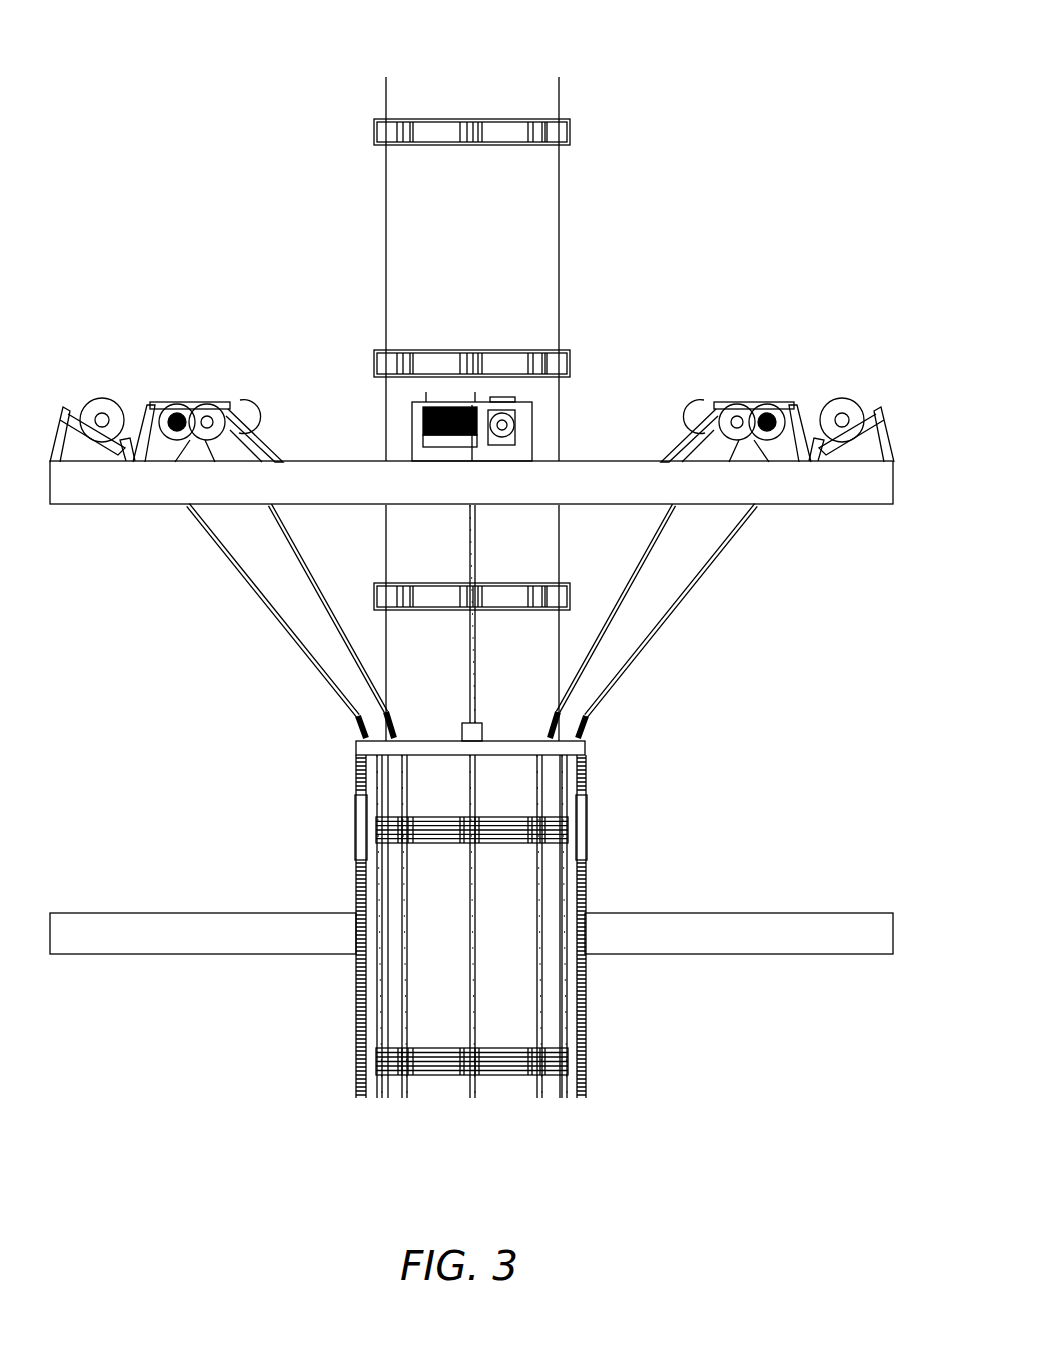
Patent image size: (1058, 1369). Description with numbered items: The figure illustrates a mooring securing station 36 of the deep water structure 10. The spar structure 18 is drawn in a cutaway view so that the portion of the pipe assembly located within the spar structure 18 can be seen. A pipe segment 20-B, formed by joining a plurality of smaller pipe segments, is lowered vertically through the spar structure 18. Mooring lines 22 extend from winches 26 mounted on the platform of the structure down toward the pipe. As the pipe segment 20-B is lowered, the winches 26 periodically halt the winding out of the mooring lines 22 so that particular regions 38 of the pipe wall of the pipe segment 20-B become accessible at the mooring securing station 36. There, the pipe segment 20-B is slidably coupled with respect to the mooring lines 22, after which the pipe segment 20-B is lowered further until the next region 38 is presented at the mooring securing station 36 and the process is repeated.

The deep water structure 10 is at (595, 56).
The spar structure 18 is at (587, 1066).
The pipe segment 20-B is at (560, 220).
The mooring lines 22 is at (298, 557).
The winches 26 is at (110, 397).
The mooring securing station 36 is at (340, 743).
The regions of the pipe wall 38 is at (571, 130).